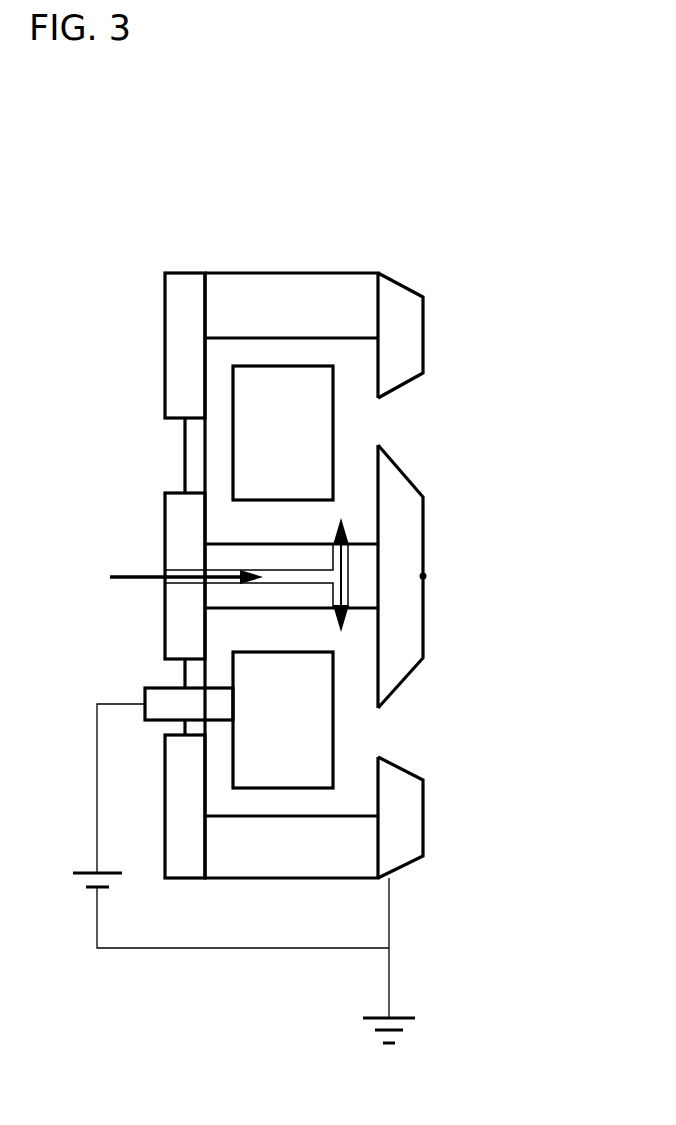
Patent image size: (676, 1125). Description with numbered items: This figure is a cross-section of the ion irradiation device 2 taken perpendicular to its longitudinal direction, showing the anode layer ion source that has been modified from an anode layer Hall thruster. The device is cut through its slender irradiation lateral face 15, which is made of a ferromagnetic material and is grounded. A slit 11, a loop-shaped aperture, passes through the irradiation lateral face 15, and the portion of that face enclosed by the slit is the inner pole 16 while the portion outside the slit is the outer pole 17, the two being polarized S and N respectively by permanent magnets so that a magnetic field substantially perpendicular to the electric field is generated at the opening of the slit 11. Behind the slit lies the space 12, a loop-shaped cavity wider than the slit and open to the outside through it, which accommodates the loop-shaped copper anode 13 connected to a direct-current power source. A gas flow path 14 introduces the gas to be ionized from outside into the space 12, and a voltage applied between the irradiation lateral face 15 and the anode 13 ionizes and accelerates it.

The ion irradiation device 2 is at (305, 568).
The slit 11 is at (405, 392).
The space 12 is at (285, 639).
The anode 13 is at (305, 721).
The gas flow path 14 is at (290, 583).
The irradiation lateral face 15 is at (423, 330).
The inner pole 16 is at (402, 530).
The outer pole 17 is at (407, 817).